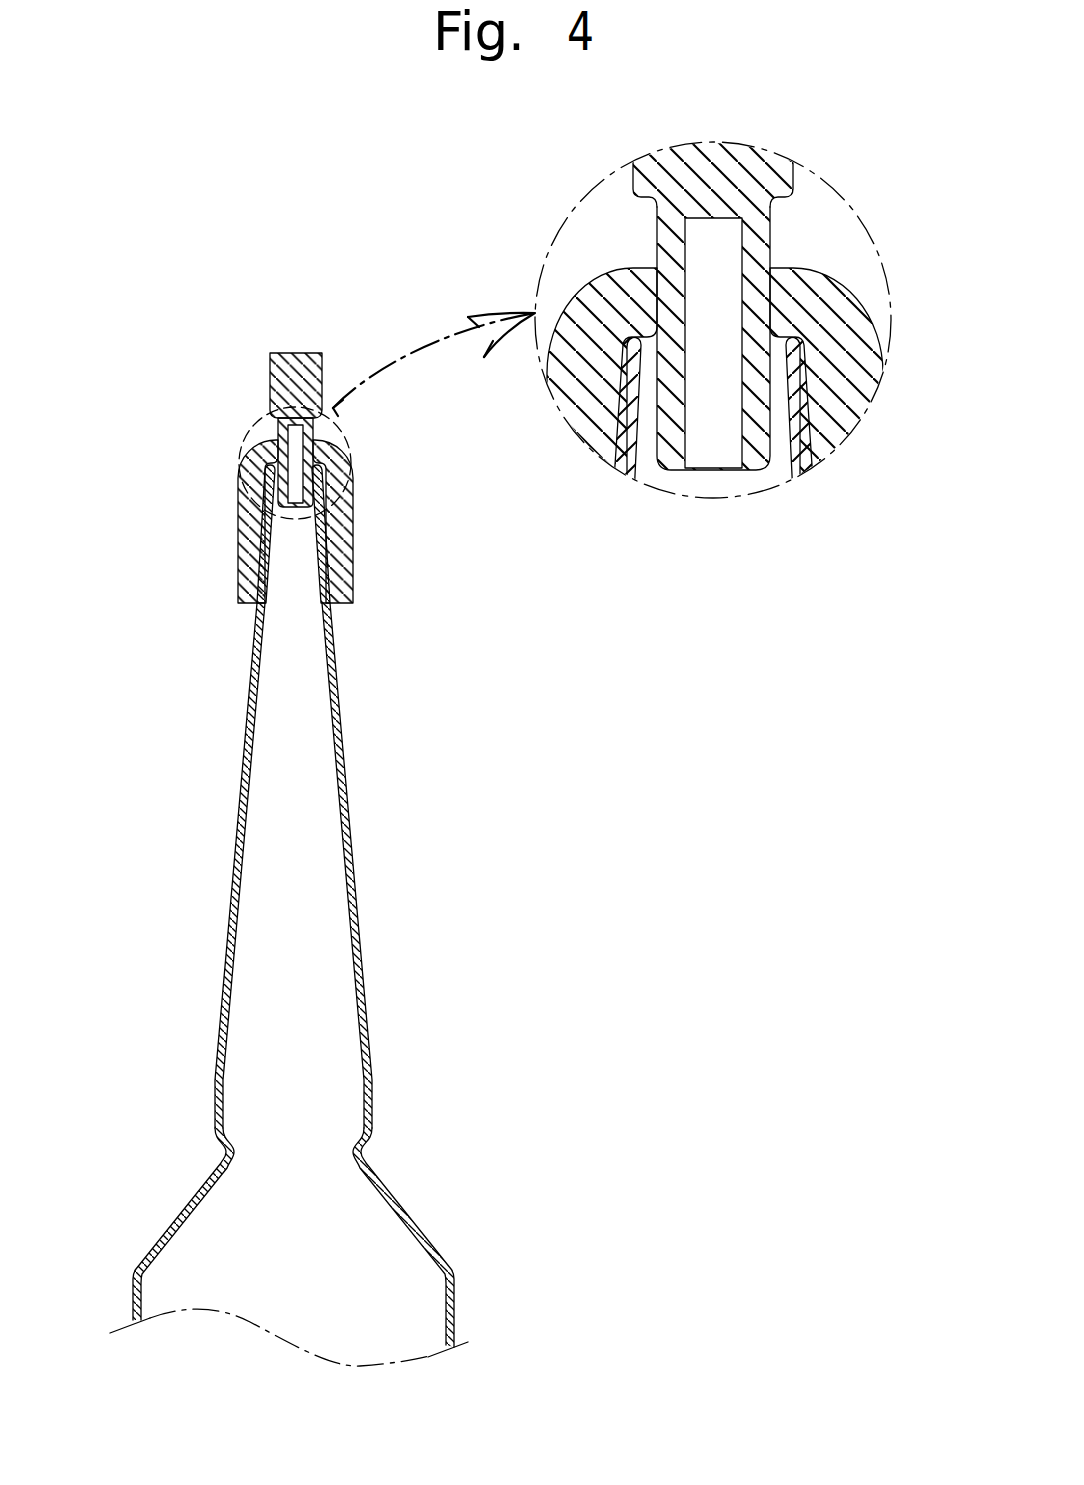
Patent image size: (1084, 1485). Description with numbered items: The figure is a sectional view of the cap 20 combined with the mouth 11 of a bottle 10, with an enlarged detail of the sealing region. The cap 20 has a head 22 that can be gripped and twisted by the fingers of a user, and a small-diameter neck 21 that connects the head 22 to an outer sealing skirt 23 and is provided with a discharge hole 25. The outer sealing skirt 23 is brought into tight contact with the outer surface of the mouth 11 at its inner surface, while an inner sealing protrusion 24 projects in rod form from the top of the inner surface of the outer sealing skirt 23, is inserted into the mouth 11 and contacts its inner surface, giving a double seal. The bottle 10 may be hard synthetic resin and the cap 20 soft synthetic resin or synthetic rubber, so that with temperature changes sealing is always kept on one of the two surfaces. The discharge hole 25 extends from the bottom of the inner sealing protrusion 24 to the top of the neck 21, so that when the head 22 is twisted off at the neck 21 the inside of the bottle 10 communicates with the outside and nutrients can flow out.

The bottle 10 is at (354, 984).
The mouth 11 is at (338, 712).
The cap 20 is at (305, 473).
The neck 21 is at (277, 427).
The head 22 is at (270, 378).
The outer sealing skirt 23 is at (247, 540).
The inner sealing protrusion 24 is at (273, 483).
The discharge hole 25 is at (299, 452).